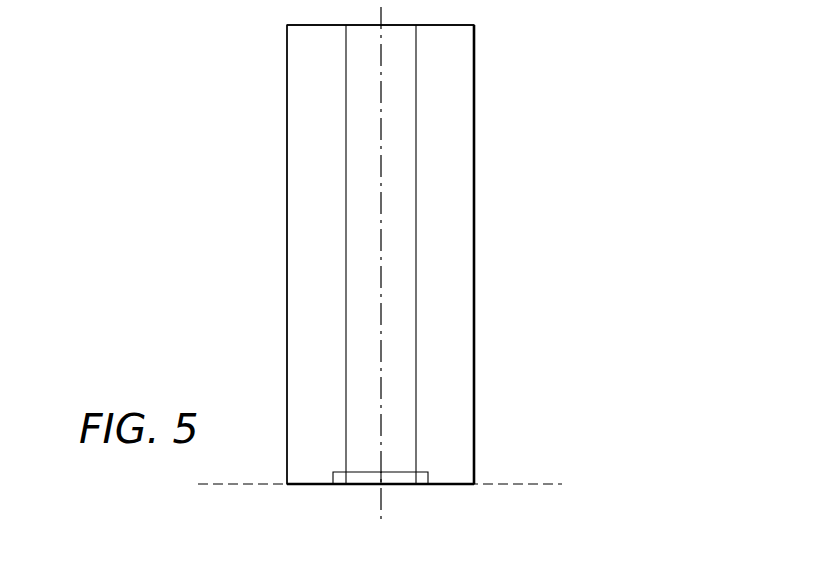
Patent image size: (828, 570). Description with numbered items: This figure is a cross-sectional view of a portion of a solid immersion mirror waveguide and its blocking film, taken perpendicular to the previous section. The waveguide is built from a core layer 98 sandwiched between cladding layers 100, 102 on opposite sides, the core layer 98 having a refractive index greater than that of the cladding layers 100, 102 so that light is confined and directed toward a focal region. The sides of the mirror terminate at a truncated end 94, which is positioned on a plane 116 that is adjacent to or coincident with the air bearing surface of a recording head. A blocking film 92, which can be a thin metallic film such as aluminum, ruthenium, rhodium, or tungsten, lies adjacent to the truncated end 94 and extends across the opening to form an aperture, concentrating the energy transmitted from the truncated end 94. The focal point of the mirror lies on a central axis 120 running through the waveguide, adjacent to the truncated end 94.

The cladding layer 100 is at (307, 277).
The cladding layer 102 is at (463, 263).
The core layer 98 is at (393, 208).
The central axis 120 is at (380, 132).
The blocking film 92 is at (365, 478).
The truncated end 94 is at (395, 478).
The plane 116 is at (527, 484).